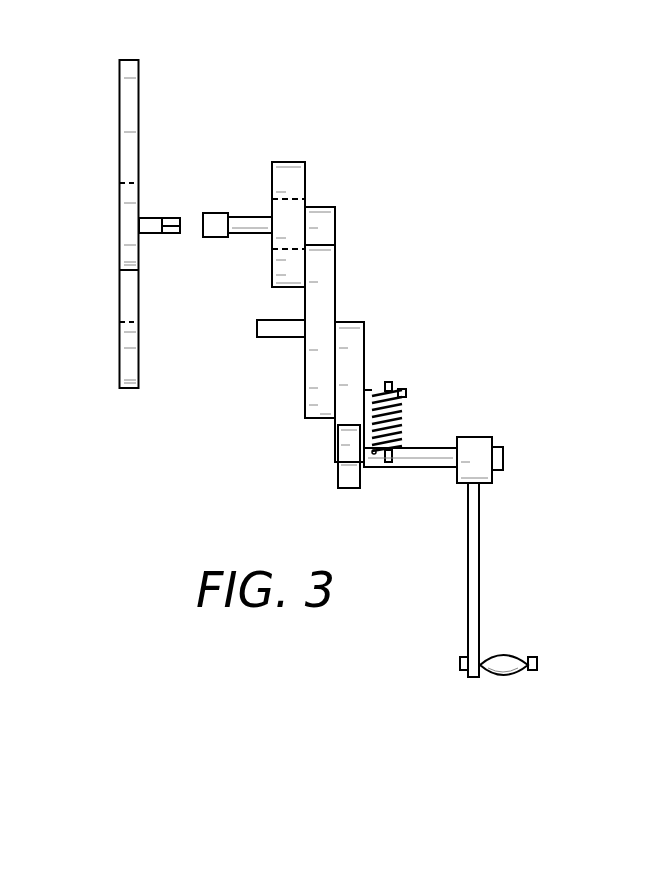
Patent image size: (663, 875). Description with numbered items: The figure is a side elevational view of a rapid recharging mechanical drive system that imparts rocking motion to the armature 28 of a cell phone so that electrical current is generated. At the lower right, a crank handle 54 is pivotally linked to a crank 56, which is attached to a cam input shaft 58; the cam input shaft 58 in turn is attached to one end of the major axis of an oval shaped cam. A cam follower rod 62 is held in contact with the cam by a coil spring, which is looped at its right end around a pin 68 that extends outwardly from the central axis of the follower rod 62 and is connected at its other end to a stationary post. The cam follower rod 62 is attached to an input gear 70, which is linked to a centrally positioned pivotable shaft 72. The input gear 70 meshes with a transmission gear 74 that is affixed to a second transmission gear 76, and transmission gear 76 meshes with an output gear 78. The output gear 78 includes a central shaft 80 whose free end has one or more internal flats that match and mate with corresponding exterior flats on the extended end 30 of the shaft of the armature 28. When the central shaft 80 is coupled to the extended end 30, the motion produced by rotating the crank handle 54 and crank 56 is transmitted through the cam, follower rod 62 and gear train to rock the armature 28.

The armature 28 is at (120, 193).
The armature shaft extended end 30 is at (173, 218).
The crank handle 54 is at (505, 648).
The crank 56 is at (480, 560).
The cam input shaft 58 is at (427, 448).
The cam follower rod 62 is at (350, 322).
The pin 68 is at (380, 383).
The input gear 70 is at (335, 285).
The pivotable shaft 72 is at (283, 337).
The transmission gear 74 is at (322, 207).
The transmission gear 76 is at (288, 162).
The output gear 78 is at (286, 225).
The central shaft 80 is at (213, 237).